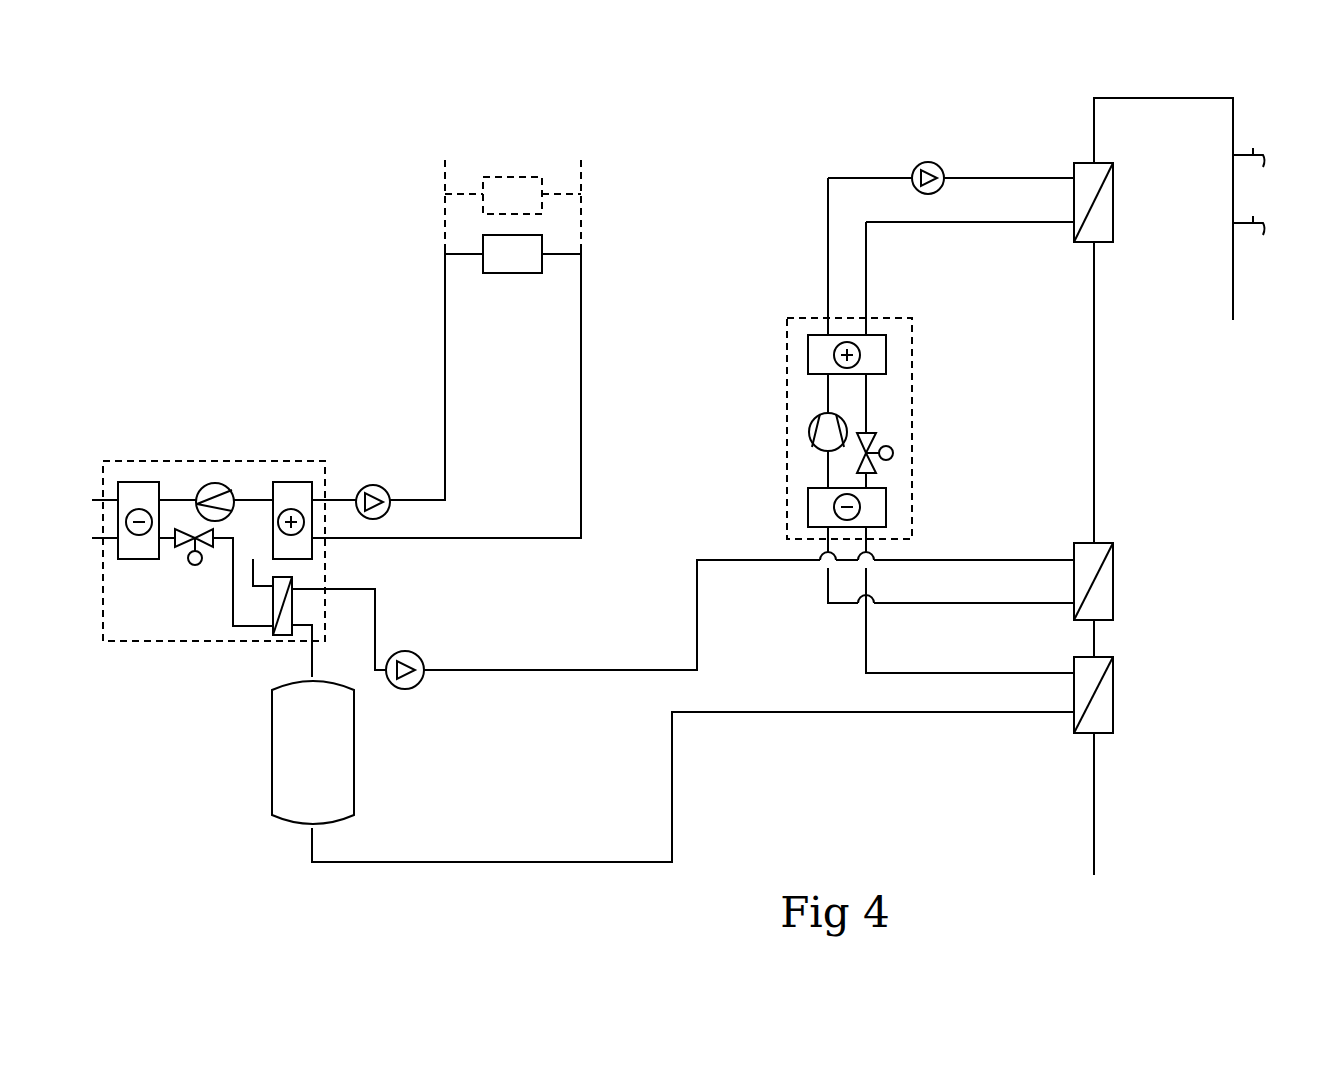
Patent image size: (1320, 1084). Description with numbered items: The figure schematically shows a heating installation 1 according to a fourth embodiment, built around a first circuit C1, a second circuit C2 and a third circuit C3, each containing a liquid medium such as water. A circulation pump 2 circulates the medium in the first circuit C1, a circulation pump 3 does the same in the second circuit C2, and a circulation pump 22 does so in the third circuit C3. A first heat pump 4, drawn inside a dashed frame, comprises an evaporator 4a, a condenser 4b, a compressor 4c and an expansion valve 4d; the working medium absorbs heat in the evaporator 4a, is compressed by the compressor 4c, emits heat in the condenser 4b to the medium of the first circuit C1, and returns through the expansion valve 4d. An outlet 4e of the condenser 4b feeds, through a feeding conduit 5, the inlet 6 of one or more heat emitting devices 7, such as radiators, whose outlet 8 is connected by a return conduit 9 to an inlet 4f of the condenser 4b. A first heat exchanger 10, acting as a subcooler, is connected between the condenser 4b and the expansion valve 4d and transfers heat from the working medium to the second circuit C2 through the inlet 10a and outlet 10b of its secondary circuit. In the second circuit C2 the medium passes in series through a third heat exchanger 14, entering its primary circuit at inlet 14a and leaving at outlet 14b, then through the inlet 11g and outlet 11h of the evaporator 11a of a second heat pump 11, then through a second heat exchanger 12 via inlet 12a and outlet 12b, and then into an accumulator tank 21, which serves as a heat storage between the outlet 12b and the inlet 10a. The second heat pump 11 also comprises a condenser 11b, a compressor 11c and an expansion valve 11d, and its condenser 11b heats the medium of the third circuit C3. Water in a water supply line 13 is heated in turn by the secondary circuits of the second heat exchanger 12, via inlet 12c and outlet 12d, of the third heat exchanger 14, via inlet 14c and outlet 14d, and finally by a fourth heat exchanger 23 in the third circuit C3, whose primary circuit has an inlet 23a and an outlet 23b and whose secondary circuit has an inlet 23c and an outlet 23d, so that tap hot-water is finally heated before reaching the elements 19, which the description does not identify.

The heating installation 1 is at (206, 837).
The circulation pump 2 is at (375, 488).
The circulation pump 3 is at (407, 657).
The first heat pump 4 is at (187, 465).
The evaporator 4a is at (139, 489).
The condenser 4b is at (288, 488).
The compressor 4c is at (218, 481).
The expansion valve 4d is at (183, 543).
The outlet of the condenser 4e is at (315, 498).
The inlet of the condenser 4f is at (317, 550).
The feeding conduit 5 is at (447, 397).
The inlet of the heat emitting devices 6 is at (442, 253).
The heat emitting devices 7 is at (513, 180).
The outlet of the heat emitting devices 8 is at (583, 253).
The return conduit 9 is at (583, 361).
The first heat exchanger 10 is at (283, 634).
The inlet of the secondary circuit of the first heat exchanger 10a is at (300, 632).
The outlet of the secondary circuit of the first heat exchanger 10b is at (294, 592).
The second heat pump 11 is at (790, 388).
The evaporator 11a is at (886, 500).
The condenser 11b is at (808, 348).
The compressor 11c is at (812, 438).
The expansion valve 11d is at (876, 440).
The inlet of the evaporator 11g is at (810, 535).
The outlet of the evaporator 11h is at (870, 535).
The second heat exchanger 12 is at (1113, 702).
The inlet of the primary circuit of the second heat exchanger 12a is at (1072, 665).
The outlet of the primary circuit of the second heat exchanger 12b is at (1072, 718).
The inlet of the secondary circuit of the second heat exchanger 12c is at (1100, 737).
The outlet of the secondary circuit of the second heat exchanger 12d is at (1100, 655).
The water supply line 13 is at (1097, 828).
The third heat exchanger 14 is at (1113, 580).
The inlet of the primary circuit of the third heat exchanger 14a is at (1072, 552).
The outlet of the primary circuit of the third heat exchanger 14b is at (1072, 607).
The inlet of the secondary circuit of the third heat exchanger 14c is at (1100, 625).
The outlet of the secondary circuit of the third heat exchanger 14d is at (1100, 545).
The tap / consumer 19 is at (1265, 152).
The accumulator tank 21 is at (343, 757).
The circulation pump 22 is at (940, 166).
The fourth heat exchanger 23 is at (1113, 198).
The inlet of the primary circuit of the fourth heat exchanger 23a is at (1072, 172).
The outlet of the primary circuit of the fourth heat exchanger 23b is at (1072, 228).
The inlet of the secondary circuit of the fourth heat exchanger 23c is at (1097, 250).
The outlet of the secondary circuit of the fourth heat exchanger 23d is at (1093, 160).
The first circuit C1 is at (437, 355).
The second circuit C2 is at (493, 652).
The third circuit C3 is at (819, 253).